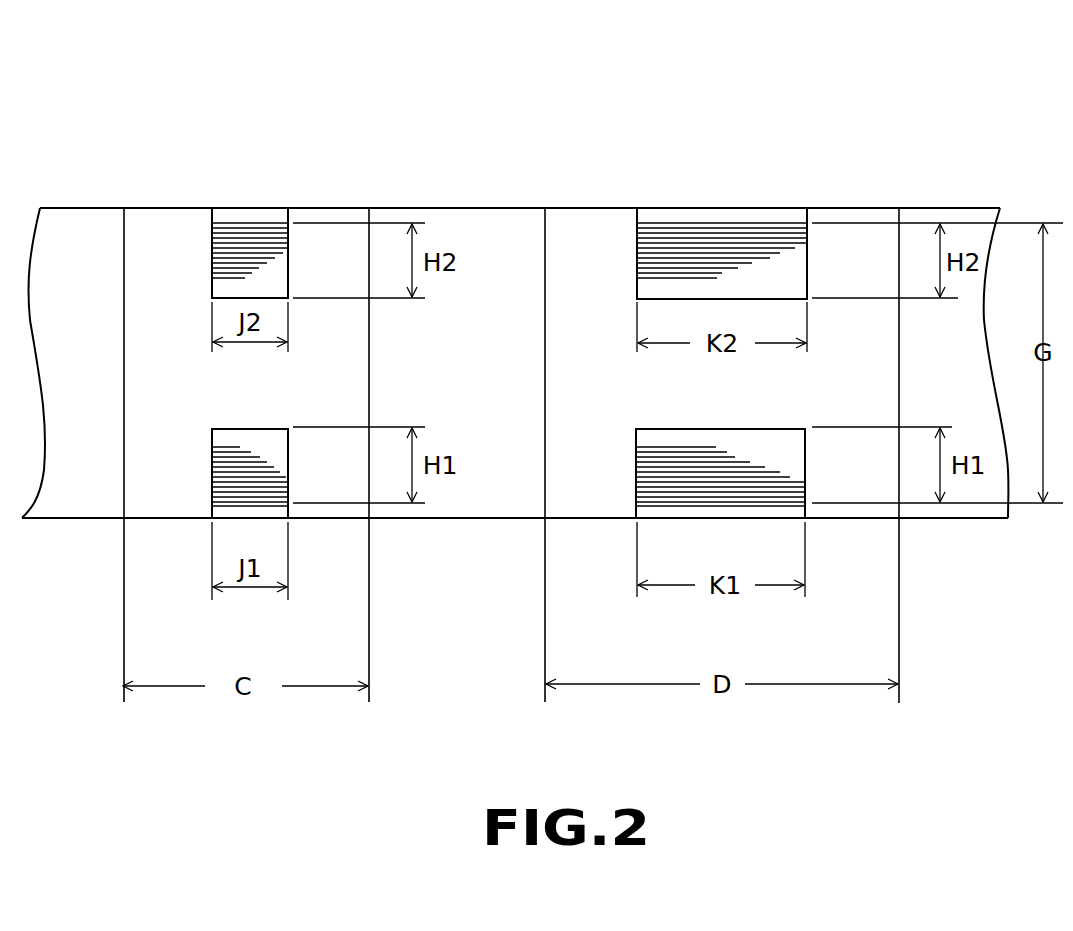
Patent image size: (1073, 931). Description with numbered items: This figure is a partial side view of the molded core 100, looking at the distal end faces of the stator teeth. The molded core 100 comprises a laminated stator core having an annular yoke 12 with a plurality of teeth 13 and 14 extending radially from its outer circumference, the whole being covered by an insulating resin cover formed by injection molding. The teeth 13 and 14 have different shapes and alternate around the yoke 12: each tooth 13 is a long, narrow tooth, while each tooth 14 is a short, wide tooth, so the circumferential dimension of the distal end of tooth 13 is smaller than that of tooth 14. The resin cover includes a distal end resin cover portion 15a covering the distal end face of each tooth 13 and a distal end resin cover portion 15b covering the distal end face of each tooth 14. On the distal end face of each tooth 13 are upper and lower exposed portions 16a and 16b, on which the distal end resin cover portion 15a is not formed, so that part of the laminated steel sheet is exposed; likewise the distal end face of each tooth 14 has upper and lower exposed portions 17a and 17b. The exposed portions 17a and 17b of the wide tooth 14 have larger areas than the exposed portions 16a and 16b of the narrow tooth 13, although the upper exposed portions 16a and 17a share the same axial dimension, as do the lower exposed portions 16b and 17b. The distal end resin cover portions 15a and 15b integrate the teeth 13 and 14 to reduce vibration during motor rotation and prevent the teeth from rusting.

The molded core 100 is at (418, 180).
The annular yoke 12 is at (503, 208).
The tooth 13 is at (262, 225).
The tooth 14 is at (766, 225).
The distal end resin cover portion 15a is at (165, 240).
The distal end resin cover portion 15b is at (592, 240).
The upper exposed portion 16a is at (240, 250).
The lower exposed portion 16b is at (212, 470).
The upper exposed portion 17a is at (690, 258).
The lower exposed portion 17b is at (636, 470).